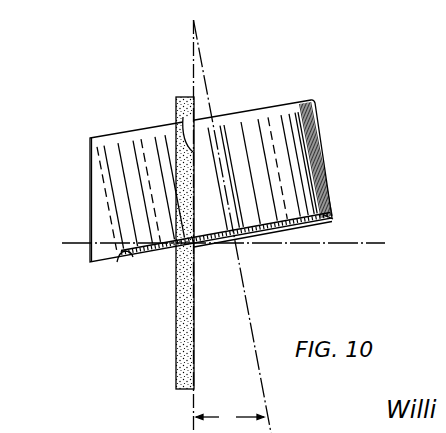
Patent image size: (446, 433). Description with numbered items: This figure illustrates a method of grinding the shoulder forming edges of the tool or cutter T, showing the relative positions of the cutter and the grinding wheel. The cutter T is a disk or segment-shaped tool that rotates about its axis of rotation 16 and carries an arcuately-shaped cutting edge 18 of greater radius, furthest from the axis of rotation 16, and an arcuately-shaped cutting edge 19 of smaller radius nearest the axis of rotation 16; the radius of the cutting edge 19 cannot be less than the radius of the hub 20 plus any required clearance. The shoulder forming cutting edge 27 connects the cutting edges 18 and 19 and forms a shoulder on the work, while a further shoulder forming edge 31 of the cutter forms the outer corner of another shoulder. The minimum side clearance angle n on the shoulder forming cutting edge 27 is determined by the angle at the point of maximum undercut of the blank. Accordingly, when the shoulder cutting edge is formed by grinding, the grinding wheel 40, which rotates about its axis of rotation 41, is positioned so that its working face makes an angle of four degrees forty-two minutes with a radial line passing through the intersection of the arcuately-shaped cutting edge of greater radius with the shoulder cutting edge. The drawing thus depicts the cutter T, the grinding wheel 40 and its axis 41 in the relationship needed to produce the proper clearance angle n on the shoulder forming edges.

The tool or cutter T is at (279, 113).
The axis of rotation of the tool 16 is at (245, 297).
The arcuately-shaped cutting edge of greater radius 18 is at (270, 230).
The arcuately-shaped cutting edge of smaller radius 19 is at (117, 262).
The hub 20 is at (323, 222).
The shoulder forming cutting edge 27 is at (176, 107).
The shoulder forming edge 31 is at (90, 150).
The grinding wheel 40 is at (176, 325).
The axis of rotation of the grinding wheel 41 is at (358, 245).
The minimum side clearance angle n is at (230, 417).